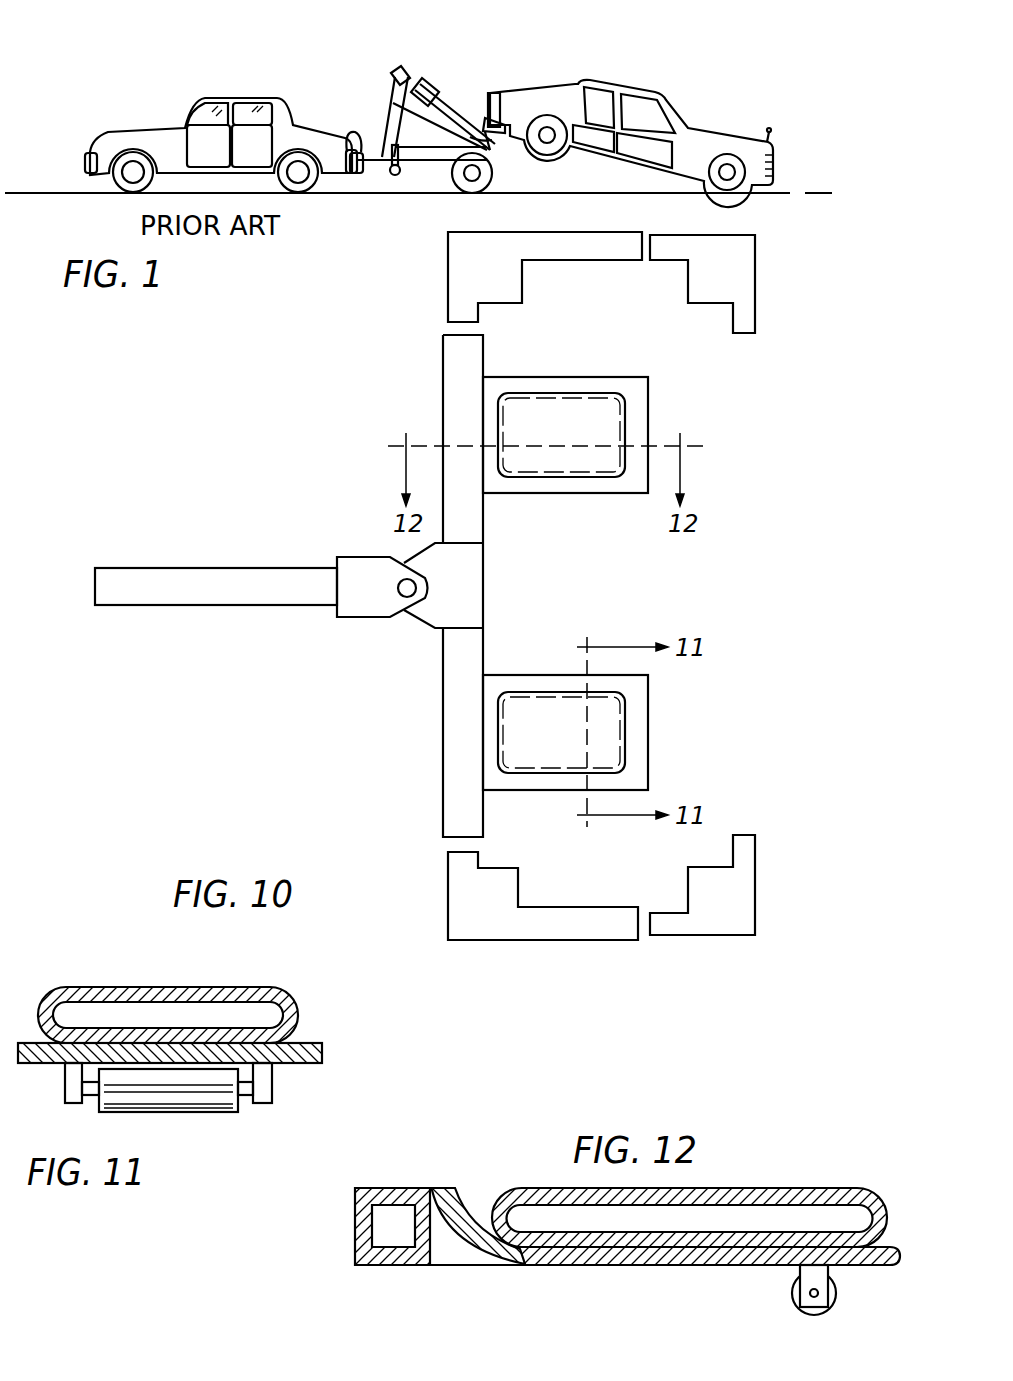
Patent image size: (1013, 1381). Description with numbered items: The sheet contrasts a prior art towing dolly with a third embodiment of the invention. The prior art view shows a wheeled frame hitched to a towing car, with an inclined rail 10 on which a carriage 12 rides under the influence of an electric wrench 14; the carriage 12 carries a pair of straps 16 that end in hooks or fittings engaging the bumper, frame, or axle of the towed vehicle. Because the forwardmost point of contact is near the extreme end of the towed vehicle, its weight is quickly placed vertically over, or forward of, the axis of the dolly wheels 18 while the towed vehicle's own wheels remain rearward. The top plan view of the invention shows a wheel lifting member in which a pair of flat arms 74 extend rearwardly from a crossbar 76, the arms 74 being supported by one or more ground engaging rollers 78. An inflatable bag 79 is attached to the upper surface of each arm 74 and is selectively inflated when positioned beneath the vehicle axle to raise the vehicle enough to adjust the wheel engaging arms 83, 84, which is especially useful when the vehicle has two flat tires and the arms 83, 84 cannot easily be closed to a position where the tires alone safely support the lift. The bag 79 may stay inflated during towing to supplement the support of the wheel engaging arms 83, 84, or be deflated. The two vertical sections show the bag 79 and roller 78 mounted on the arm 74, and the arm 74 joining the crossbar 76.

In FIG. 1, the inclined rail 10 is at (393, 108).
In FIG. 1, the carriage 12 is at (422, 80).
In FIG. 1, the electric wrench 14 is at (395, 72).
In FIG. 1, the straps 16 is at (470, 128).
In FIG. 1, the wheels 18 is at (495, 176).
In FIG. 10, the flat arms 74 is at (652, 423).
In FIG. 11, the flat arms 74 is at (326, 1056).
In FIG. 12, the flat arms 74 is at (628, 1255).
In FIG. 10, the crossbar 76 is at (446, 379).
In FIG. 12, the crossbar 76 is at (354, 1248).
In FIG. 11, the ground engaging rollers 78 is at (224, 1112).
In FIG. 12, the ground engaging rollers 78 is at (796, 1300).
In FIG. 10, the inflatable bag 79 is at (574, 405).
In FIG. 11, the inflatable bag 79 is at (300, 1016).
In FIG. 12, the inflatable bag 79 is at (822, 1190).
In FIG. 10, the wheel engaging arm 83 is at (585, 254).
In FIG. 10, the wheel engaging arm 84 is at (757, 272).